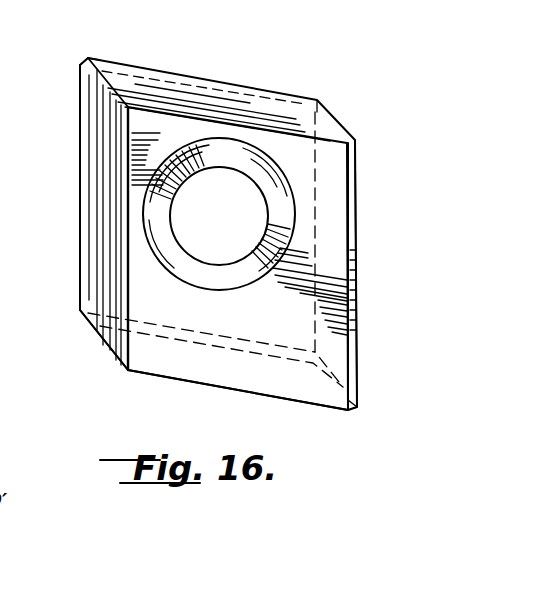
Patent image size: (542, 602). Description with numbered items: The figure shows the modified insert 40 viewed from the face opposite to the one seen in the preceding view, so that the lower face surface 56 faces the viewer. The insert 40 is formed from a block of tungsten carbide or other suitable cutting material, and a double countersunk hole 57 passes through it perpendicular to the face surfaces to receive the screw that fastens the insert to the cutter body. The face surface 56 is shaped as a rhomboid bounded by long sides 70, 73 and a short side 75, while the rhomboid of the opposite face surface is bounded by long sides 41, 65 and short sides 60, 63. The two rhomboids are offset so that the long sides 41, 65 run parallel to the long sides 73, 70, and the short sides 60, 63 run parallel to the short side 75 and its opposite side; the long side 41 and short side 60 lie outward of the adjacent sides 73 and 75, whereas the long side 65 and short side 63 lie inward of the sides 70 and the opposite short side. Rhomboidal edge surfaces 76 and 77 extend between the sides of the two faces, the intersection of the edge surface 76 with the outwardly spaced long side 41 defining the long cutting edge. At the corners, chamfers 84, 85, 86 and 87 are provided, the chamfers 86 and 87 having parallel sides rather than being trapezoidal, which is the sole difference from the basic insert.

The modified insert 40 is at (356, 113).
The long side of first face surface 41 is at (80, 182).
The second face surface 56 is at (290, 314).
The double countersunk hole 57 is at (188, 183).
The short side of first face surface 60 is at (197, 73).
The short side of first face surface 63 is at (240, 337).
The long side of first face surface 65 is at (313, 218).
The long side of second face surface 70 is at (350, 264).
The long side of second face surface 73 is at (130, 312).
The short side of second face surface 75 is at (148, 110).
The edge surface 76 is at (97, 232).
The edge surface 77 is at (242, 108).
The chamfer 84 is at (213, 327).
The chamfer 85 is at (127, 147).
The chamfer 86 is at (85, 62).
The chamfer 87 is at (350, 319).